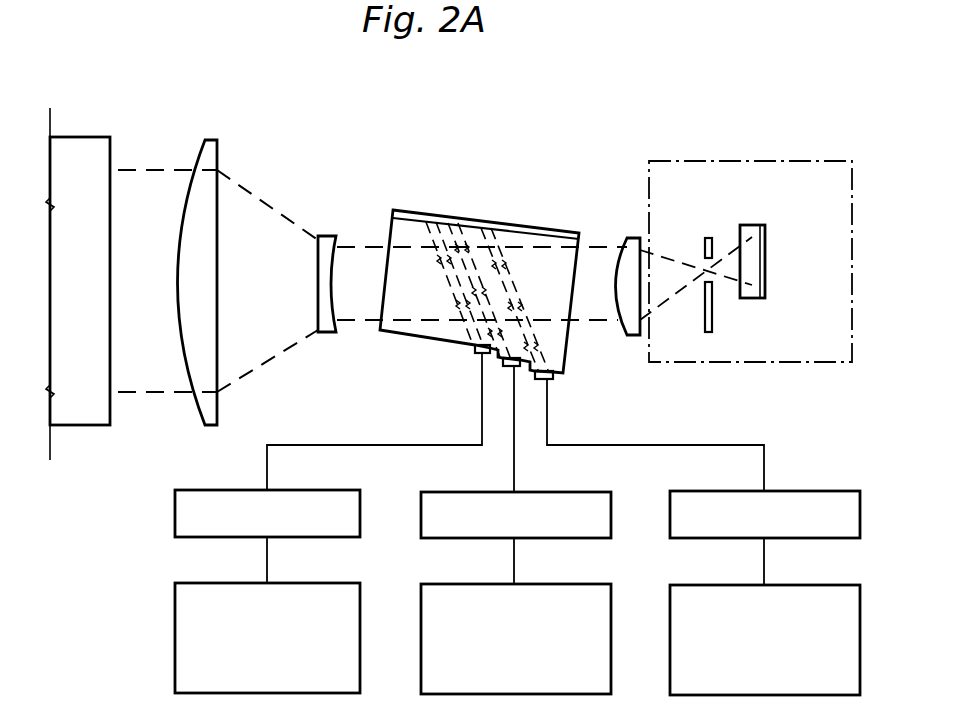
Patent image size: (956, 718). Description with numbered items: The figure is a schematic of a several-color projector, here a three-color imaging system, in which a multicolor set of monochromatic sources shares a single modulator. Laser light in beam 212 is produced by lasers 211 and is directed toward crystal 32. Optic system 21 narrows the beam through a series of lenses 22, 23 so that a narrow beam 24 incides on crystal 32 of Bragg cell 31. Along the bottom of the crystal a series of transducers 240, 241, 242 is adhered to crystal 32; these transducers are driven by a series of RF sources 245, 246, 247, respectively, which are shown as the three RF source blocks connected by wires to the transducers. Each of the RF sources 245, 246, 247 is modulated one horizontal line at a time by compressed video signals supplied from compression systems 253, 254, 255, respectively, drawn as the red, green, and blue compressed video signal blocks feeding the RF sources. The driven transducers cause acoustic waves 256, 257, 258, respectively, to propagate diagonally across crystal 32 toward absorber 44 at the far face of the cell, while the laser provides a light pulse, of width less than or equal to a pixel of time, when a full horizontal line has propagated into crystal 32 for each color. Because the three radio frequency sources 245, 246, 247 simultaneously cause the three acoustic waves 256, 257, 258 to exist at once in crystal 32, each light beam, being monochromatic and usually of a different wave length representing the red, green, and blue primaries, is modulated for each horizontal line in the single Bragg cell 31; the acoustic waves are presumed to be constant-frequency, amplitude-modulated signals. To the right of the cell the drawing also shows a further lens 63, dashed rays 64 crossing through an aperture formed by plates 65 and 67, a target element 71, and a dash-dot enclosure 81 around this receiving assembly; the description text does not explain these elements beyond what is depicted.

The optic system 21 is at (265, 297).
The lens 22 is at (219, 140).
The lens 23 is at (318, 236).
The narrow beam 24 is at (357, 247).
The Bragg cell 31 is at (422, 302).
The crystal 32 is at (552, 267).
The absorber 44 is at (527, 228).
The lens 63 is at (630, 238).
The light rays 64 is at (672, 308).
The aperture plate 65 is at (695, 267).
The aperture plate 67 is at (710, 238).
The photodetector target 71 is at (767, 257).
The receiver housing 81 is at (793, 160).
The lasers 211 is at (90, 137).
The beam 212 is at (132, 170).
The transducer 240 is at (475, 348).
The transducer 241 is at (503, 364).
The transducer 242 is at (550, 381).
The RF source 245 is at (232, 490).
The RF source 246 is at (478, 492).
The RF source 247 is at (733, 491).
The compression system 253 is at (225, 583).
The compression system 254 is at (476, 584).
The compression system 255 is at (716, 585).
The acoustic wave 256 is at (433, 227).
The acoustic wave 257 is at (460, 233).
The acoustic wave 258 is at (488, 229).